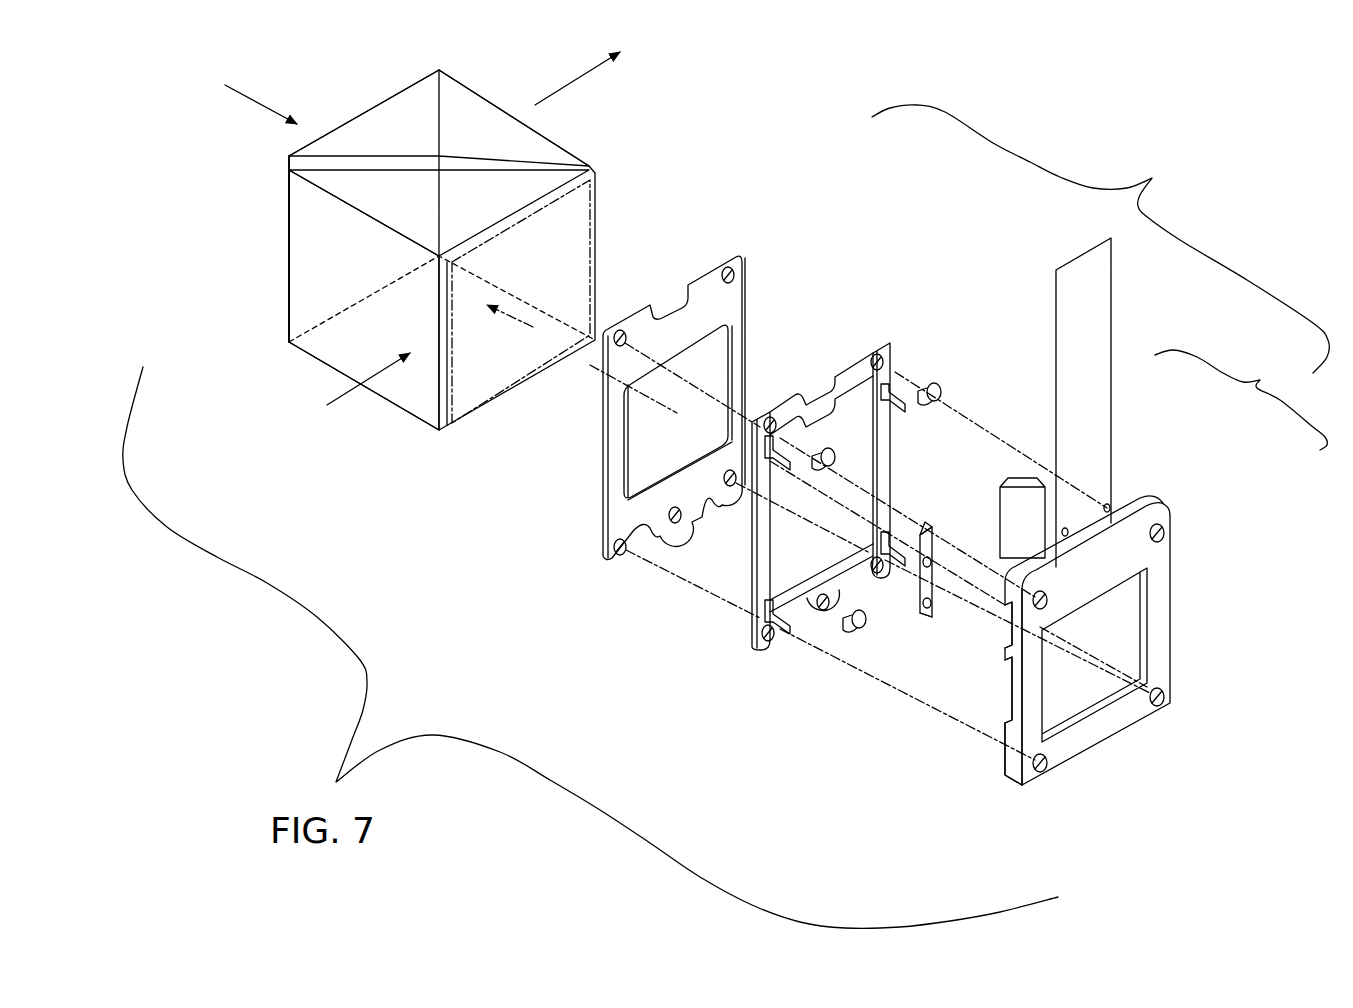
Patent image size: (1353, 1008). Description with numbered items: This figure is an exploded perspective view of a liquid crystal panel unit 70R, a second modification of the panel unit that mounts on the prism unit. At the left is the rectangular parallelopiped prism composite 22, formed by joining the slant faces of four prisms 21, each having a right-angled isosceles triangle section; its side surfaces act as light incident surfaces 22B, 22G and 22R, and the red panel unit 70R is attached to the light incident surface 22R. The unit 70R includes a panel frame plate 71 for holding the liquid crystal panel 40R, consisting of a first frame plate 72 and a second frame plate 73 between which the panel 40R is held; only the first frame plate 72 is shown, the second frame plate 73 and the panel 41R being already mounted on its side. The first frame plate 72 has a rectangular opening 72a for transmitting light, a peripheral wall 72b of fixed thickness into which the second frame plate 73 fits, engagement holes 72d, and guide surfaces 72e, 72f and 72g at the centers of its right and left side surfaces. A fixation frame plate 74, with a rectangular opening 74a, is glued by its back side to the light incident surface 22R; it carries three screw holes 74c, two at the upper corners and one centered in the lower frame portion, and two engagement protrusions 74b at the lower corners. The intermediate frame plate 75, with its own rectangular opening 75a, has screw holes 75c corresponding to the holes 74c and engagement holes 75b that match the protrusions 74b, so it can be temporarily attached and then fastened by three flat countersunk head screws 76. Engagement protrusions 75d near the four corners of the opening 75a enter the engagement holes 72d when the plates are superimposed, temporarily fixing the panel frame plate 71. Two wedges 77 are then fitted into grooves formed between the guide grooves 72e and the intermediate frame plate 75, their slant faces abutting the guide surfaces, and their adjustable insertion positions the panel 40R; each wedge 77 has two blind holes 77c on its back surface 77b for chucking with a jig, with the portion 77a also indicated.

The prism 21 is at (411, 143).
The prism composite 22 is at (284, 360).
The light incident surface 22B is at (305, 237).
The light incident surface 22G is at (303, 268).
The light incident surface 22R is at (568, 242).
The liquid crystal panel 40R is at (1075, 715).
The liquid crystal panel 41R is at (1093, 390).
The liquid crystal panel unit 70R is at (726, 517).
The panel frame plate 71 is at (1241, 400).
The first frame plate 72 is at (1178, 517).
The rectangular opening 72a is at (1125, 625).
The peripheral wall 72b is at (1010, 768).
The engagement hole 72d is at (1165, 540).
The guide surface 72e is at (1160, 603).
The guide surface 72f is at (1010, 640).
The guide surface 72g is at (1005, 713).
The second frame plate 73 is at (1130, 503).
The fixation frame plate 74 is at (752, 258).
The rectangular opening 74a is at (632, 455).
The engagement protrusion 74b is at (728, 488).
The screw hole 74c is at (626, 334).
The intermediate frame plate 75 is at (903, 347).
The rectangular opening 75a is at (755, 580).
The engagement hole 75b is at (877, 574).
The screw hole 75c is at (882, 365).
The engagement protrusion 75d is at (897, 407).
The flat countersunk head screw 76 is at (938, 393).
The wedge 77 is at (1023, 470).
The hole 77a is at (933, 563).
The back surface 77b is at (935, 600).
The blind hole 77c is at (918, 615).